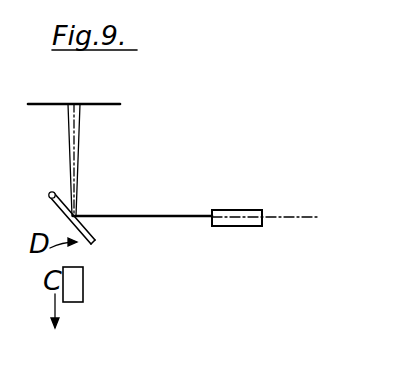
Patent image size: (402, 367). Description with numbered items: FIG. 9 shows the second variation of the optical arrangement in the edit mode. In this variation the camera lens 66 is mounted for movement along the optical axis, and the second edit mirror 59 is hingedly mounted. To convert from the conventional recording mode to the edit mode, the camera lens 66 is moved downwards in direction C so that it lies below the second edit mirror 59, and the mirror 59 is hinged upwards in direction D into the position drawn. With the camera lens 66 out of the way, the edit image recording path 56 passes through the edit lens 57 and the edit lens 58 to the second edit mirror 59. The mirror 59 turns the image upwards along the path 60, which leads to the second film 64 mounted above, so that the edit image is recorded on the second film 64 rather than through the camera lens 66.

The second film 64 is at (165, 71).
The path 60 is at (158, 123).
The edit lens 58 is at (165, 171).
The second edit mirror 59 is at (161, 233).
The edit lens 57 is at (270, 167).
The edit image recording path 56 is at (338, 176).
The camera lens 66 is at (151, 278).